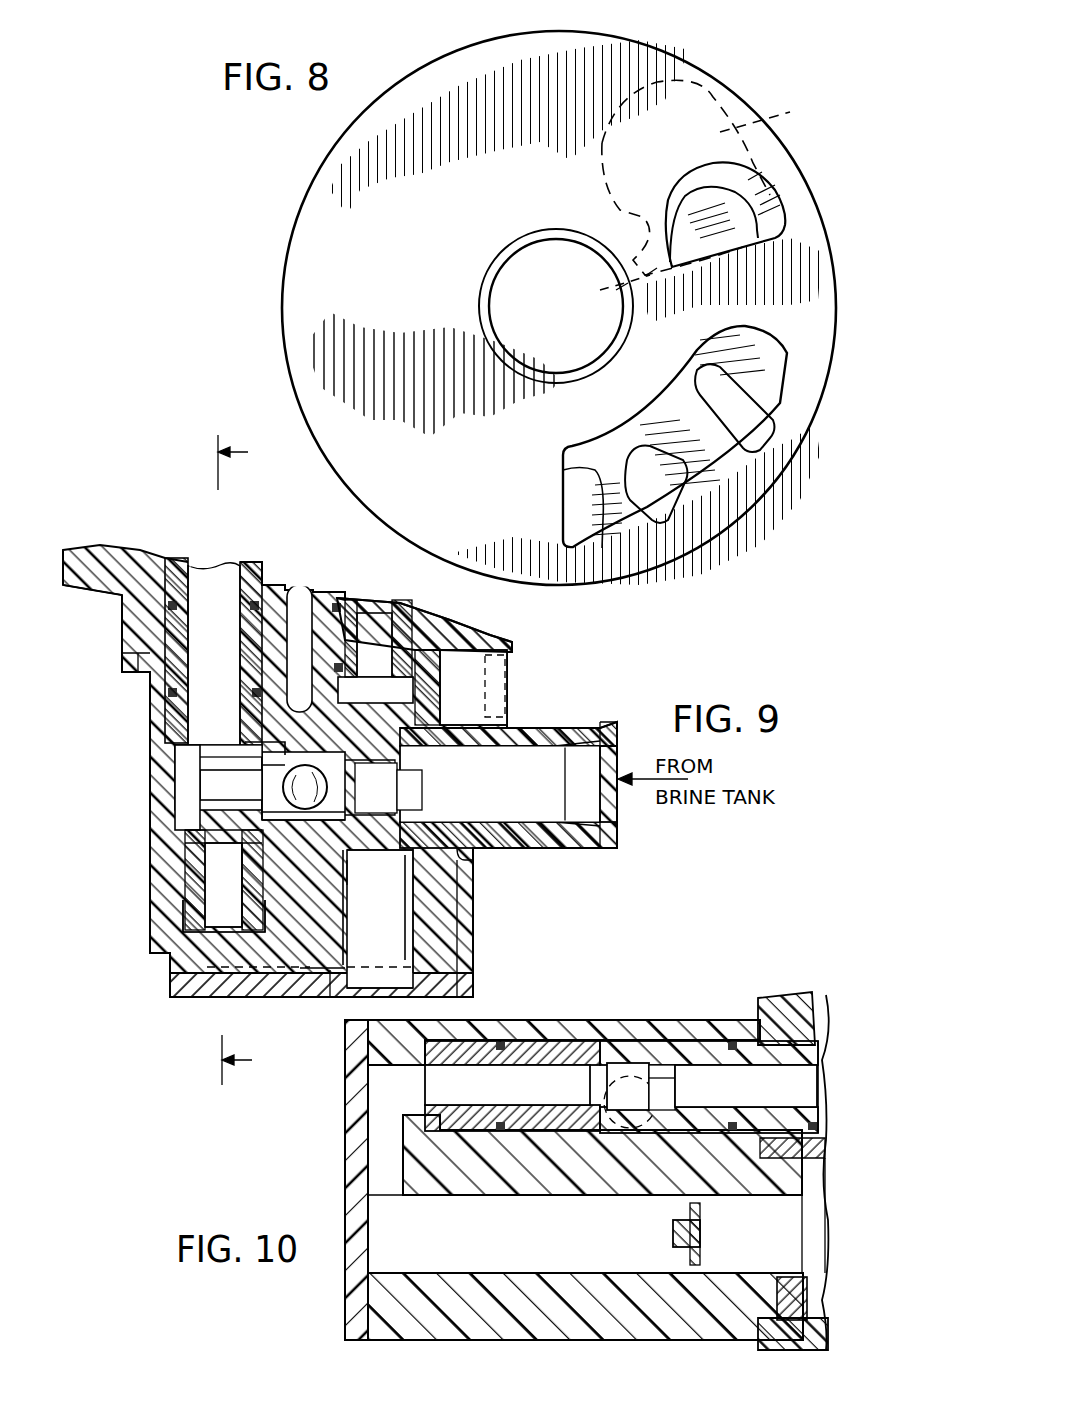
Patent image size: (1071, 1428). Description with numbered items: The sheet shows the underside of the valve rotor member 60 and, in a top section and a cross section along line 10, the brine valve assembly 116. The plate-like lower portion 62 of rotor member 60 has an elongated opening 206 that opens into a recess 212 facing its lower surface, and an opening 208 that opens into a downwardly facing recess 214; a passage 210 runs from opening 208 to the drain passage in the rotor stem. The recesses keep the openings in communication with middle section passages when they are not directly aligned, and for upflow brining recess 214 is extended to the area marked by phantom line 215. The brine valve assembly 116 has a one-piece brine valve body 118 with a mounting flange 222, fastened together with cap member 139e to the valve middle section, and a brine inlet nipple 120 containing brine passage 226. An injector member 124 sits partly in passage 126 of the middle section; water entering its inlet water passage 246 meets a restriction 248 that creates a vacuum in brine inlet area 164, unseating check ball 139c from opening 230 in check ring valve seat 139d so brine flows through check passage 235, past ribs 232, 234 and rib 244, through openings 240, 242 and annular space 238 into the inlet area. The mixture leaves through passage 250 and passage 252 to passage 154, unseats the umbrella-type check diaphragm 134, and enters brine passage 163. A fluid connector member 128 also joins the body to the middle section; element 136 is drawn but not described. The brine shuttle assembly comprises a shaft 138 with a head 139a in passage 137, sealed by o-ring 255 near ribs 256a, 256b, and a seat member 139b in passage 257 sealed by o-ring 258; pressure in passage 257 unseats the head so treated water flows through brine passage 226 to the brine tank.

In FIG. 8, the rotor member 60 is at (696, 45).
In FIG. 8, the plate-like lower portion 62 is at (735, 93).
In FIG. 8, the phantom line 215 is at (790, 112).
In FIG. 8, the recess 214 is at (755, 180).
In FIG. 8, the opening 208 is at (680, 205).
In FIG. 8, the passage 210 is at (625, 230).
In FIG. 8, the recess 212 is at (760, 340).
In FIG. 8, the elongated opening 206 is at (775, 420).
In FIG. 9, the section line 10— 10 is at (251, 765).
In FIG. 9, the brine valve assembly 116 is at (62, 880).
In FIG. 10, the brine valve assembly 116 is at (330, 1165).
In FIG. 9, the brine valve body 118 is at (476, 905).
In FIG. 9, the brine inlet nipple 120 is at (575, 725).
In FIG. 9, the injector member 124 is at (182, 572).
In FIG. 9, the passage 126 is at (178, 560).
In FIG. 10, the passage 126 is at (818, 1055).
In FIG. 9, the fluid connector member 128 is at (352, 610).
In FIG. 10, the umbrella-type check diaphragm 134 is at (703, 1237).
In FIG. 10, the seal 136 is at (807, 1307).
In FIG. 9, the passage 137 is at (328, 975).
In FIG. 9, the shaft 138 is at (362, 787).
In FIG. 9, the head 139a is at (380, 863).
In FIG. 9, the seat member 139b is at (440, 723).
In FIG. 9, the check ball 139c is at (278, 870).
In FIG. 9, the check ring valve seat 139d is at (418, 810).
In FIG. 9, the cap member 139e is at (205, 1000).
In FIG. 10, the cap member 139e is at (345, 1070).
In FIG. 10, the passage 154 is at (610, 1239).
In FIG. 10, the brine passage 163 is at (820, 1223).
In FIG. 9, the brine inlet area 164 is at (195, 787).
In FIG. 10, the brine inlet area 164 is at (630, 1070).
In FIG. 9, the mounting flange 222 is at (133, 672).
In FIG. 9, the brine passage 226 is at (556, 801).
In FIG. 9, the opening 230 is at (392, 790).
In FIG. 9, the rib 232 is at (298, 815).
In FIG. 9, the rib 234 is at (262, 752).
In FIG. 9, the check passage 235 is at (265, 845).
In FIG. 9, the annular space 238 is at (180, 807).
In FIG. 10, the annular space 238 is at (612, 1065).
In FIG. 9, the opening 240 is at (256, 745).
In FIG. 9, the opening 242 is at (210, 887).
In FIG. 9, the rib 244 is at (178, 803).
In FIG. 9, the inlet water passage 246 is at (212, 588).
In FIG. 10, the inlet water passage 246 is at (770, 1093).
In FIG. 9, the restriction 248 is at (205, 742).
In FIG. 9, the passage 250 is at (217, 828).
In FIG. 9, the passage 252 is at (212, 907).
In FIG. 10, the passage 252 is at (540, 1093).
In FIG. 9, the o-ring 255 is at (352, 860).
In FIG. 9, the rib 256a is at (407, 900).
In FIG. 9, the rib 256b is at (340, 955).
In FIG. 9, the passage 257 is at (400, 697).
In FIG. 9, the o-ring 258 is at (455, 715).